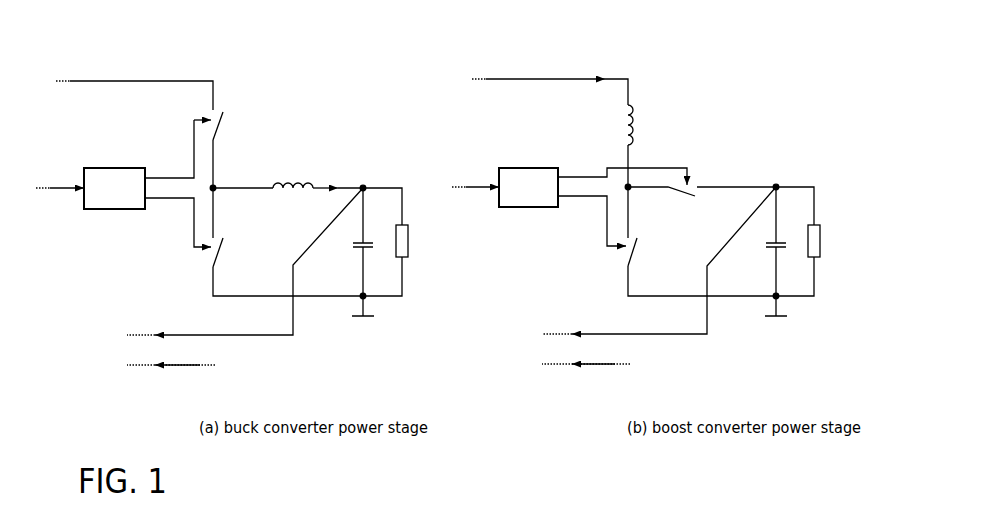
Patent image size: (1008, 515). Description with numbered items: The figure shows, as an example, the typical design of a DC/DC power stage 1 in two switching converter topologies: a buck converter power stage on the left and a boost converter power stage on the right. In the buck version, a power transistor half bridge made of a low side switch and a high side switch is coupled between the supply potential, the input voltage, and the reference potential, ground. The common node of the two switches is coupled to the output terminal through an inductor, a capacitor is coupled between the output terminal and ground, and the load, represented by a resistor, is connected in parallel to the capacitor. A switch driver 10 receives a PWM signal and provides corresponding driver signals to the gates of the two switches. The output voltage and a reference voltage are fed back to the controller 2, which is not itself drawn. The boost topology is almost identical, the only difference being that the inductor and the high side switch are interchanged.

The DC/DC power stage 1 is at (449, 189).
The switch driver 10 is at (321, 188).
The controller 2 is at (316, 352).